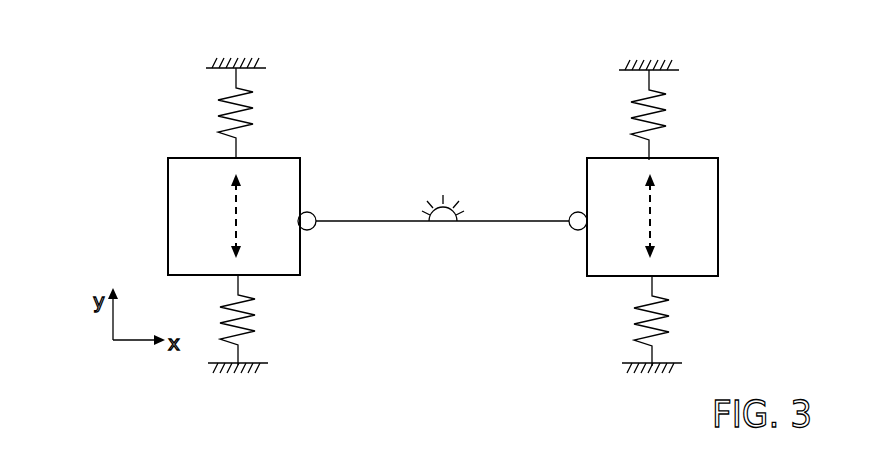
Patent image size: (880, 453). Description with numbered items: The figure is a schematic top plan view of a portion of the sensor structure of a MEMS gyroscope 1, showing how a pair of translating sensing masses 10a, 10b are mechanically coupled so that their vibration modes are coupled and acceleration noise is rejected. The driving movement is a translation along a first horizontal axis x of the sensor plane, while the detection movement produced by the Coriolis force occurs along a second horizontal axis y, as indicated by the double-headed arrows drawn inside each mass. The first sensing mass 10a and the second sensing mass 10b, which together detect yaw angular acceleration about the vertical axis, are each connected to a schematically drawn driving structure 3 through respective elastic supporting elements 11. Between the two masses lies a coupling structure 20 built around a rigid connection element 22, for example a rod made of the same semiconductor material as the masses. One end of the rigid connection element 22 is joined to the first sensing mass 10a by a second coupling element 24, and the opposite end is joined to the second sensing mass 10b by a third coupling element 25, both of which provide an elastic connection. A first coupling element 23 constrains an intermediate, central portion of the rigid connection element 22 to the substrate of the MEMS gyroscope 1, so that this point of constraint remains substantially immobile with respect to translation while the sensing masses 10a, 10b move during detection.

The MEMS gyroscope 1 is at (78, 45).
The driving structure 3 is at (262, 62).
The elastic supporting elements 11 is at (252, 108).
The first sensing mass 10a is at (185, 209).
The second sensing mass 10b is at (700, 207).
The coupling structure 20 is at (442, 208).
The rigid connection element 22 is at (518, 222).
The first coupling element 23 is at (446, 214).
The second coupling element 24 is at (308, 214).
The third coupling element 25 is at (577, 231).